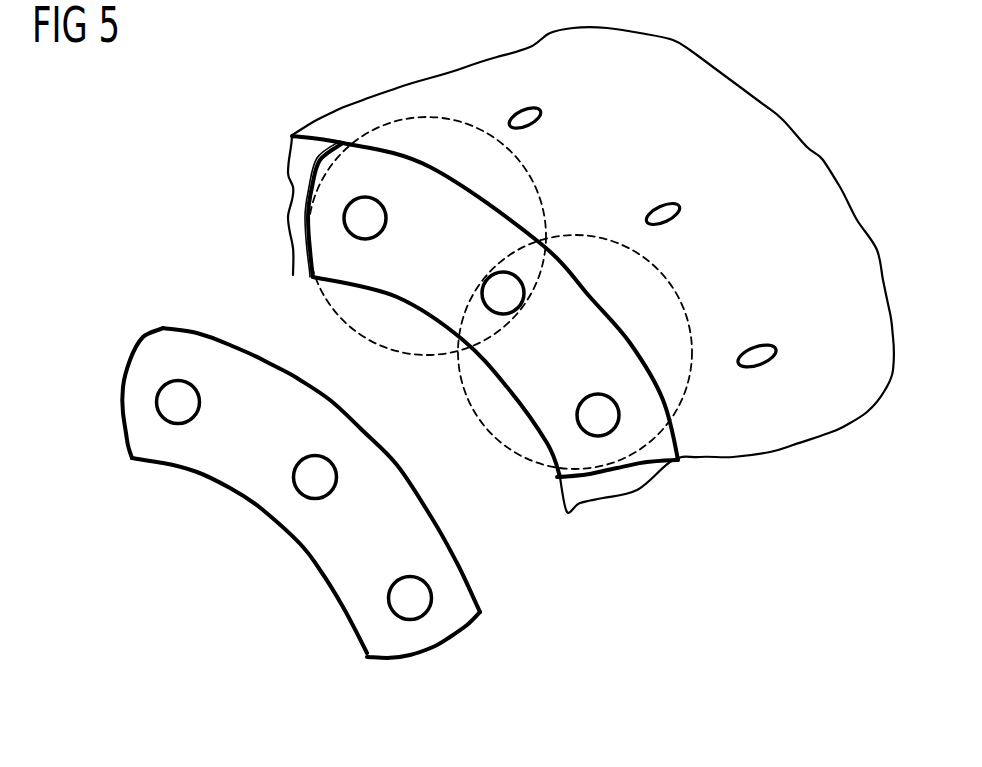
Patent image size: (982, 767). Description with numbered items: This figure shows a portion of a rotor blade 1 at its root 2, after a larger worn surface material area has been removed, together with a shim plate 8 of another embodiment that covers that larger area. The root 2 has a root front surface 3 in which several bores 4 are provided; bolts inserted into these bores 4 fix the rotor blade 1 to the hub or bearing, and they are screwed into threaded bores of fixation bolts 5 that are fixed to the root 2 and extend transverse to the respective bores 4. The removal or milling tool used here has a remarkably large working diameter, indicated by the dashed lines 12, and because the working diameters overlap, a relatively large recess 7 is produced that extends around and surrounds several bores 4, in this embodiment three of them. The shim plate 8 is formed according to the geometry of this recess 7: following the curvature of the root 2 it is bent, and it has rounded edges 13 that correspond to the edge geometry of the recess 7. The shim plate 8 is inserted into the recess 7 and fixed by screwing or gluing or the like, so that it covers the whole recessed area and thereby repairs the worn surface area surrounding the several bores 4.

The rotor blade 1 is at (830, 100).
The root 2 is at (427, 106).
The root front surface 3 is at (300, 182).
The bores 4 is at (350, 213).
The fixation bolts 5 is at (543, 115).
The recess 7 is at (327, 170).
The shim plate 8 is at (393, 467).
The dashed lines 12 is at (515, 185).
The rounded edges 13 is at (122, 397).